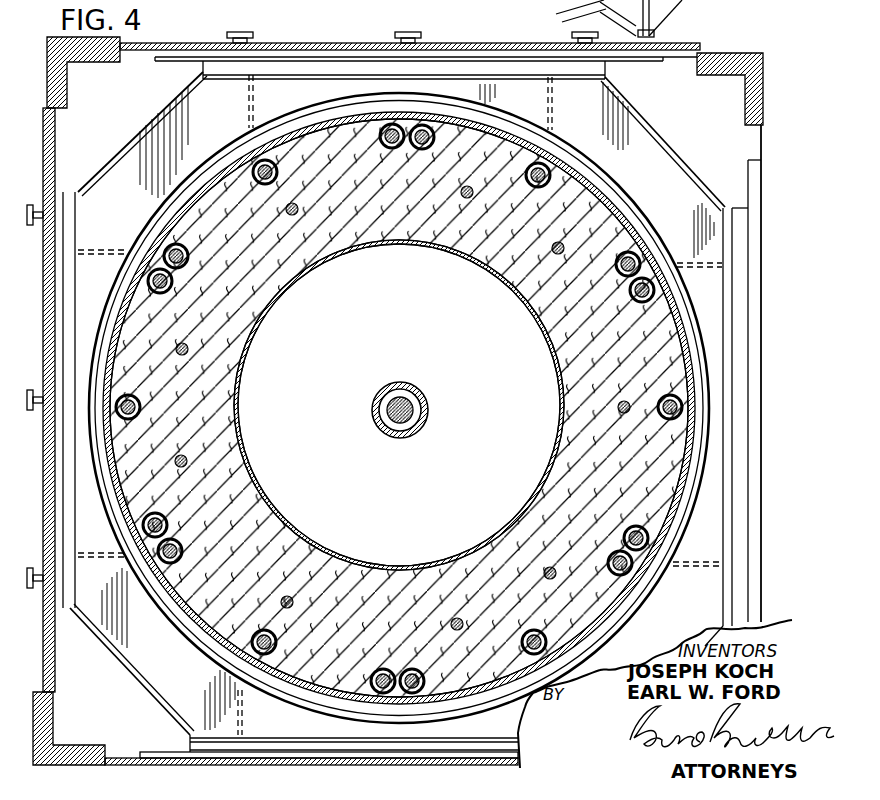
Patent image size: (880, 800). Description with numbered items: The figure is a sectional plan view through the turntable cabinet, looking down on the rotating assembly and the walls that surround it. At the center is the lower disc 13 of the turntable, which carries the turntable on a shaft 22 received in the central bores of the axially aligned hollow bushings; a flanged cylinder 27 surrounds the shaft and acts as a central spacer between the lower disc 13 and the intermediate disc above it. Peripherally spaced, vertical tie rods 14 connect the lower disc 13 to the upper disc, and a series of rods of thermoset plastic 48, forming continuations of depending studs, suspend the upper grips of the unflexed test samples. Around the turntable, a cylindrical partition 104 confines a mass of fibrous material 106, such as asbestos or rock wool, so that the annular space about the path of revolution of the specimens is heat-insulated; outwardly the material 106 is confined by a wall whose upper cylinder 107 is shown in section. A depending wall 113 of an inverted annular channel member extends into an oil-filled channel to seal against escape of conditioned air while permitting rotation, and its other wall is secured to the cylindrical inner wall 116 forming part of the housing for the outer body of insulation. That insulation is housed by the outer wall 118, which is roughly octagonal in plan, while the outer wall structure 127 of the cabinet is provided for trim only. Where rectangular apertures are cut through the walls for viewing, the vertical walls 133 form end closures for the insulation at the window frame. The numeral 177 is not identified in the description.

The lower disc 13 is at (399, 405).
The tie rods 14 is at (402, 408).
The shaft 22 is at (425, 411).
The flanged cylinder 27 is at (417, 410).
The rod of thermoset plastic 48 is at (391, 416).
The cylindrical partition 104 is at (399, 408).
The fibrous material 106 is at (399, 405).
The upper cylinder 107 is at (399, 408).
The depending wall 113 is at (399, 408).
The cylindrical inner wall 116 is at (399, 408).
The outer wall 118 is at (411, 401).
The outer wall structure 127 is at (402, 390).
The vertical walls 133 is at (400, 405).
The frame member 177 is at (597, 18).